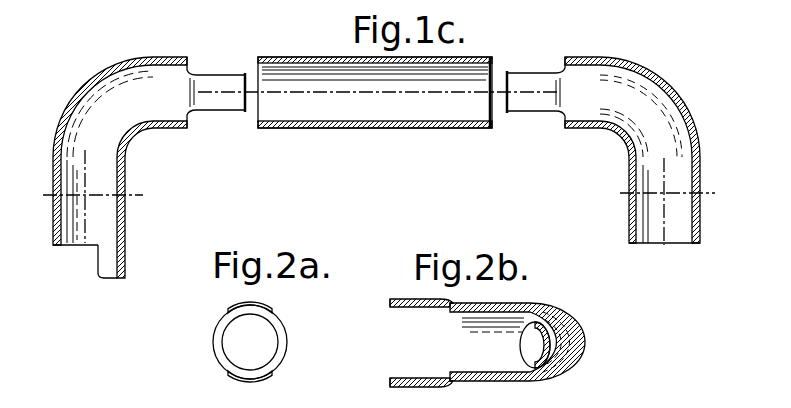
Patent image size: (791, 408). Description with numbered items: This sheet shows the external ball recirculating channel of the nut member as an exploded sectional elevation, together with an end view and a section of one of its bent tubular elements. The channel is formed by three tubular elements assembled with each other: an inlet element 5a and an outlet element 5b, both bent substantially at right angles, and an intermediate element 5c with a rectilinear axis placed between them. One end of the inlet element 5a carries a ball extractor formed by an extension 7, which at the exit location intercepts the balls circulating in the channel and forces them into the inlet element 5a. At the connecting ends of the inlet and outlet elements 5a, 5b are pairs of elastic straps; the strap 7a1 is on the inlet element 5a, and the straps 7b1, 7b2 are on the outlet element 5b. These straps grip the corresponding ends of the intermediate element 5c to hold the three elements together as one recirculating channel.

In FIG. 1c, the inlet element 5a is at (81, 98).
In FIG. 1c, the outlet element 5b is at (702, 152).
In FIG. 2a, the outlet element 5b is at (212, 344).
In FIG. 2b, the outlet element 5b is at (588, 342).
In FIG. 1c, the intermediate element 5c is at (385, 128).
In FIG. 1c, the extension 7 is at (100, 276).
In FIG. 1c, the elastic strap 7a1 is at (210, 75).
In FIG. 1c, the elastic strap 7b1 is at (530, 82).
In FIG. 2a, the elastic strap 7b1 is at (236, 306).
In FIG. 2b, the elastic strap 7b1 is at (404, 307).
In FIG. 2a, the elastic strap 7b2 is at (243, 378).
In FIG. 2b, the elastic strap 7b2 is at (398, 378).